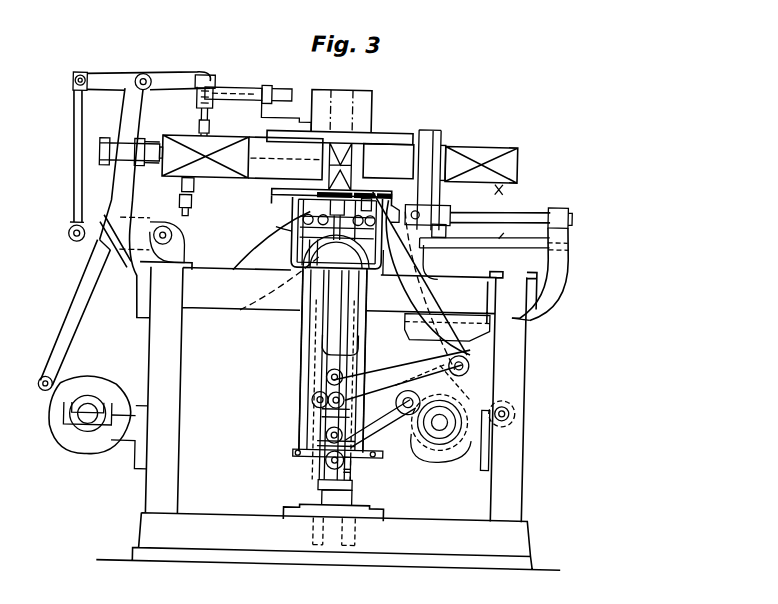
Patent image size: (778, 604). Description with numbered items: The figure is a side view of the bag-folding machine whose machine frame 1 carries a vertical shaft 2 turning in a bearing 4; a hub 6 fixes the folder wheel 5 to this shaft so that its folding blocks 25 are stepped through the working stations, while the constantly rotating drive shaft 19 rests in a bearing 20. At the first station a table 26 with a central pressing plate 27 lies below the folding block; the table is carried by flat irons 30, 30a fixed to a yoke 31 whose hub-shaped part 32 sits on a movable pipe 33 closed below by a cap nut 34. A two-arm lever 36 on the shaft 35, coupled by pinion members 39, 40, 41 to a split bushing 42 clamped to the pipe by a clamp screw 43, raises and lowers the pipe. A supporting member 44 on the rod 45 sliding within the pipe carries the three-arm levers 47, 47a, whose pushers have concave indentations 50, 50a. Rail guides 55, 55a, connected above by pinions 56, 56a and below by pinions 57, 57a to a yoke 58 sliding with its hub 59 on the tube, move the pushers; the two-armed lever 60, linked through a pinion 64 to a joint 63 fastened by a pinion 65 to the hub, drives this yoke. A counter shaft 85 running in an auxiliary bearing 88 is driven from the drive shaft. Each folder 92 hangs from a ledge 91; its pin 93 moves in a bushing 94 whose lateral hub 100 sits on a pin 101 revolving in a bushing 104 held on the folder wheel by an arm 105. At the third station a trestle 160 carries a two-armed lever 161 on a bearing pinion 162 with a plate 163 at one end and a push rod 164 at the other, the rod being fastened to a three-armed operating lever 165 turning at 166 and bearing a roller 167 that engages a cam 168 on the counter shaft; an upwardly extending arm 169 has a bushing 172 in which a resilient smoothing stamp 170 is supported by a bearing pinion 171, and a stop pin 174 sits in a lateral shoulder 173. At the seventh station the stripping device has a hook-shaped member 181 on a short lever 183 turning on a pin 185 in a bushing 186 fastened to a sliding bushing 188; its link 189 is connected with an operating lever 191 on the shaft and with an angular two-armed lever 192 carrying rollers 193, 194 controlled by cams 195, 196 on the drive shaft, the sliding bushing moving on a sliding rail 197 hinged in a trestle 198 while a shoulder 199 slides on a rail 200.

The machine frame 1 is at (254, 262).
The vertical shaft 2 is at (342, 496).
The bearing 4 is at (372, 514).
The folder wheel 5 is at (385, 134).
The hub 6 is at (365, 100).
The drive shaft 19 is at (432, 438).
The bearing 20 is at (490, 449).
The folding block 25 is at (342, 140).
The table 26 is at (270, 206).
The pressing plate 27 is at (375, 186).
The flat iron 30 is at (386, 248).
The flat iron 30a is at (288, 242).
The yoke 31 is at (300, 287).
The hub-shaped part 32 is at (360, 292).
The movable pipe 33 is at (348, 346).
The cap nut 34 is at (320, 486).
The shaft 35 is at (467, 357).
The two-arm lever 36 is at (376, 362).
The pinion member 39 is at (314, 362).
The pinion member 40 is at (326, 379).
The pinion member 41 is at (344, 400).
The split bushing 42 is at (322, 412).
The clamp screw 43 is at (312, 402).
The supporting member 44 is at (294, 252).
The rod 45 is at (349, 357).
The three-arm lever 47 is at (376, 226).
The three-arm lever 47a is at (299, 220).
The concave indentation 50 is at (380, 192).
The concave indentation 50a is at (348, 190).
The rail guide 55 is at (364, 327).
The rail guide 55a is at (300, 332).
The pinion 56 is at (391, 209).
The pinion 56a is at (281, 232).
The pinion 57 is at (384, 450).
The pinion 57a is at (294, 455).
The yoke 58 is at (352, 464).
The hub 59 is at (352, 477).
The two-armed lever 60 is at (384, 428).
The joint 63 is at (318, 443).
The pinion 64 is at (327, 435).
The pinion 65 is at (327, 463).
The counter shaft 85 is at (90, 409).
The auxiliary bearing 88 is at (136, 455).
The ledge 91 is at (230, 137).
The folder 92 is at (262, 137).
The pin 93 is at (193, 120).
The bushing 94 is at (190, 101).
The lateral hub 100 is at (224, 88).
The pin 101 is at (278, 94).
The bushing 104 is at (261, 86).
The arm 105 is at (266, 112).
The trestle 160 is at (128, 196).
The two-armed lever 161 is at (174, 77).
The bearing pinion 162 is at (131, 78).
The plate 163 is at (208, 80).
The push rod 164 is at (76, 116).
The three-armed operating lever 165 is at (81, 248).
The pivot 166 is at (168, 237).
The roller 167 is at (40, 384).
The cam 168 is at (54, 426).
The upwardly extending arm 169 is at (114, 204).
The resilient smoothing stamp 170 is at (157, 162).
The bearing pinion 171 is at (99, 140).
The bushing 172 is at (136, 143).
The lateral shoulder 173 is at (175, 208).
The stop pin 174 is at (189, 189).
The hook-shaped member 181 is at (413, 163).
The short lever 183 is at (436, 144).
The pin 185 is at (465, 143).
The bushing 186 is at (446, 207).
The sliding bushing 188 is at (498, 197).
The link 189 is at (436, 203).
The operating lever 191 is at (438, 318).
The angular two-armed lever 192 is at (480, 375).
The roller 193 is at (515, 412).
The roller 194 is at (400, 390).
The cam 195 is at (445, 460).
The cam 196 is at (495, 397).
The sliding rail 197 is at (500, 209).
The trestle 198 is at (565, 236).
The shoulder 199 is at (442, 237).
The rail 200 is at (514, 230).